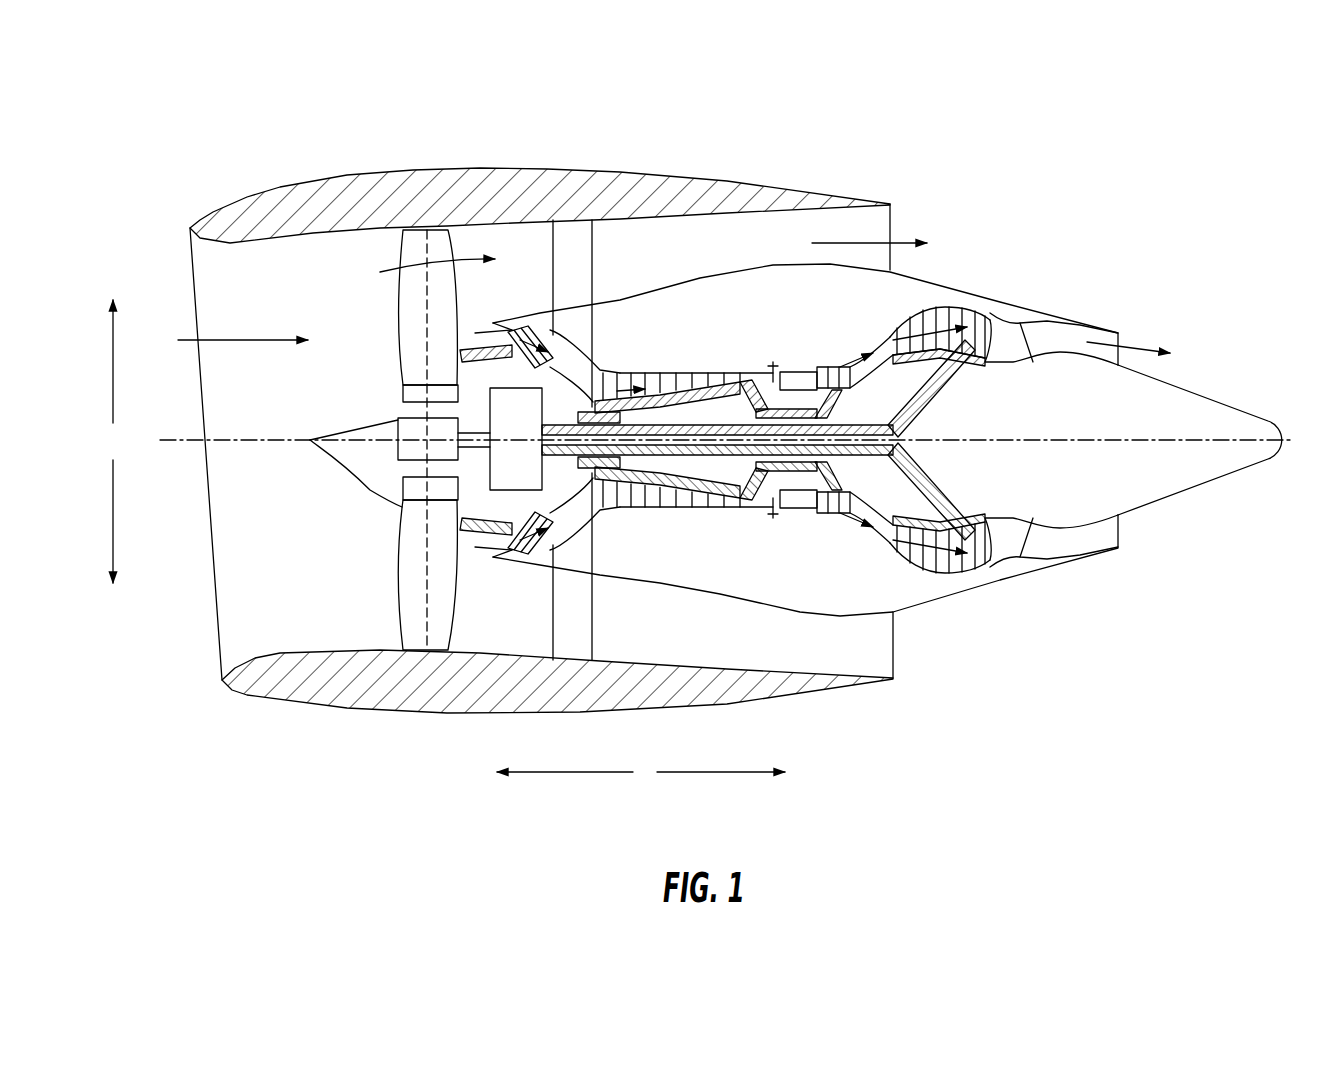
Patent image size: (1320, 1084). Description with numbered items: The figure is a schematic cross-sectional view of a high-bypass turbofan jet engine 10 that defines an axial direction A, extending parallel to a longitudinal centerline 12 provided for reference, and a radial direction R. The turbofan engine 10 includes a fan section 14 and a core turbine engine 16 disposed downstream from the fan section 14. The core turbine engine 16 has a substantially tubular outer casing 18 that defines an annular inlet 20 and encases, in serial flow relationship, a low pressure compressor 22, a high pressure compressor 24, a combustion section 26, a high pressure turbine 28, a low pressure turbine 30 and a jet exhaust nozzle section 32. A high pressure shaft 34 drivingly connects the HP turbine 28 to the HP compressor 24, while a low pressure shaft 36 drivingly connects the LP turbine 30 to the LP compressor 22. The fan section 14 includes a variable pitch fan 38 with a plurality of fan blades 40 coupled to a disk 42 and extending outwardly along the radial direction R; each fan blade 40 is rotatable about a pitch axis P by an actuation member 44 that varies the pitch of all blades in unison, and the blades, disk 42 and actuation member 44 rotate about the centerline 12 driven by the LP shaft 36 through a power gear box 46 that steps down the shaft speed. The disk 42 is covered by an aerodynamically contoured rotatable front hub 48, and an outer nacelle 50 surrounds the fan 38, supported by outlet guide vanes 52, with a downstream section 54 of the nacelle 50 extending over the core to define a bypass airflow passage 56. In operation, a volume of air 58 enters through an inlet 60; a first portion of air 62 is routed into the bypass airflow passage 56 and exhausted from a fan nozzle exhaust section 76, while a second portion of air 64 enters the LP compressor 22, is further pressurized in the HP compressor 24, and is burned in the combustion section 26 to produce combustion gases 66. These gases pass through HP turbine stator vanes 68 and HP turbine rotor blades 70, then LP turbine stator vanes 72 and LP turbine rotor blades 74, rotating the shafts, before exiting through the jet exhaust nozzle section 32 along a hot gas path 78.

The turbofan jet engine 10 is at (1037, 183).
The longitudinal centerline 12 is at (1060, 440).
The fan section 14 is at (360, 257).
The core turbine engine 16 is at (712, 330).
The outer casing 18 is at (750, 602).
The annular inlet 20 is at (493, 555).
The low pressure compressor 22 is at (553, 503).
The high pressure compressor 24 is at (620, 493).
The combustion section 26 is at (790, 500).
The high pressure turbine 28 is at (877, 512).
The low pressure turbine 30 is at (977, 565).
The jet exhaust nozzle section 32 is at (1037, 548).
The high pressure shaft 34 is at (797, 410).
The low pressure shaft 36 is at (920, 402).
The variable pitch fan 38 is at (370, 492).
The fan blades 40 is at (400, 593).
The disk 42 is at (420, 393).
The actuation member 44 is at (397, 422).
The power gear box 46 is at (527, 405).
The rotatable front hub 48 is at (320, 455).
The outer nacelle 50 is at (447, 715).
The outlet guide vanes 52 is at (593, 250).
The downstream section of nacelle 54 is at (837, 195).
The bypass airflow passage 56 is at (765, 259).
The volume of air 58 is at (240, 338).
The inlet 60 is at (220, 653).
The first portion of air 62 is at (413, 270).
The second portion of air 64 is at (477, 333).
The combustion gases 66 is at (830, 362).
The HP turbine stator vanes 68 is at (807, 513).
The HP turbine rotor blades 70 is at (837, 488).
The LP turbine stator vanes 72 is at (902, 547).
The LP turbine rotor blades 74 is at (913, 563).
The fan nozzle exhaust section 76 is at (880, 228).
The hot gas path 78 is at (877, 347).
The pitch axis P is at (433, 243).
The radial direction R is at (113, 441).
The axial direction A is at (641, 772).